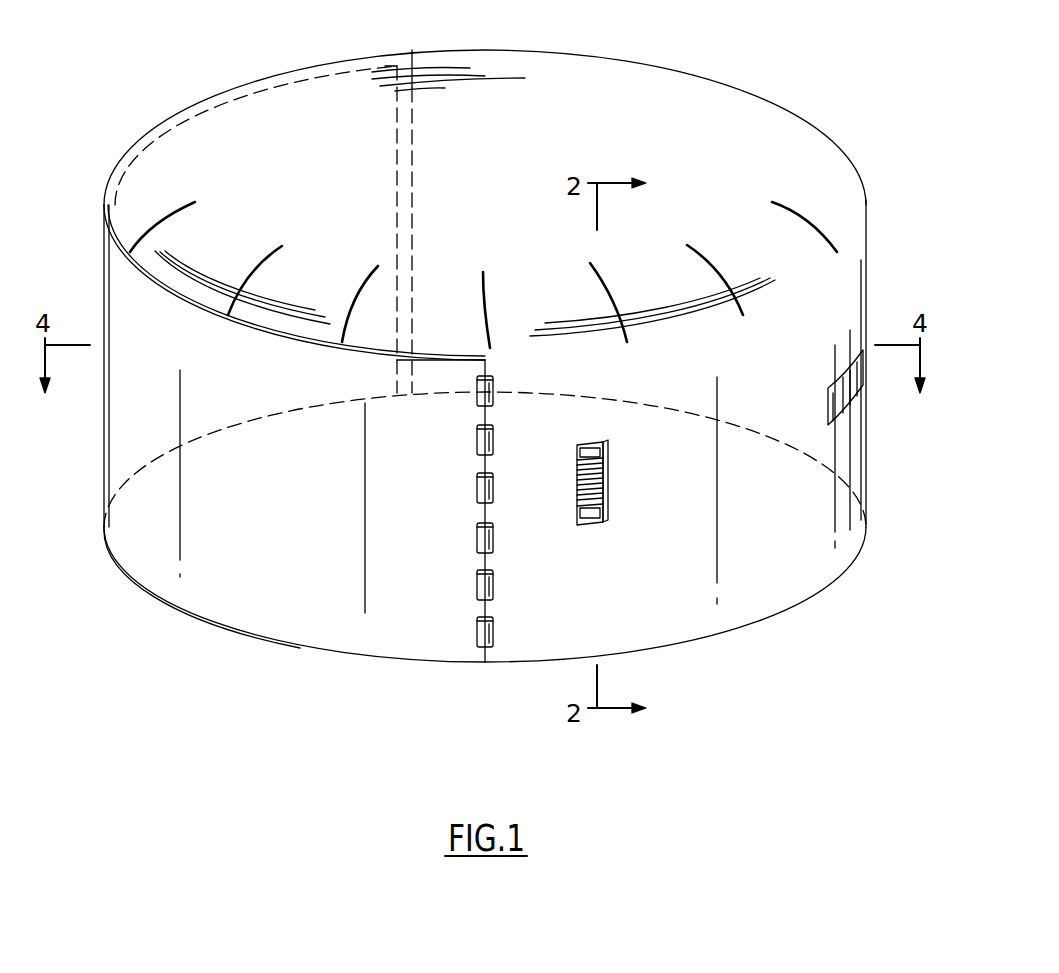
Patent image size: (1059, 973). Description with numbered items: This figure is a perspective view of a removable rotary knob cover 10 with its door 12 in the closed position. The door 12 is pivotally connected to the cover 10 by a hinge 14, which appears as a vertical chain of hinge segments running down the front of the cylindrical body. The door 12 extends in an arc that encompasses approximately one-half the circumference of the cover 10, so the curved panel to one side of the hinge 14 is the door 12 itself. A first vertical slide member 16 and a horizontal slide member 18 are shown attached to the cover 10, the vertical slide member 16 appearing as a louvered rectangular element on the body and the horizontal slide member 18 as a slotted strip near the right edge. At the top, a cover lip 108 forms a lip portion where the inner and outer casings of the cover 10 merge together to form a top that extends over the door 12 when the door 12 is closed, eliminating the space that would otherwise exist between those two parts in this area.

The removable rotary knob cover 10 is at (690, 41).
The door 12 is at (267, 598).
The hinge 14 is at (478, 590).
The first vertical slide member 16 is at (610, 487).
The horizontal slide member 18 is at (828, 407).
The cover lip 108 is at (143, 242).